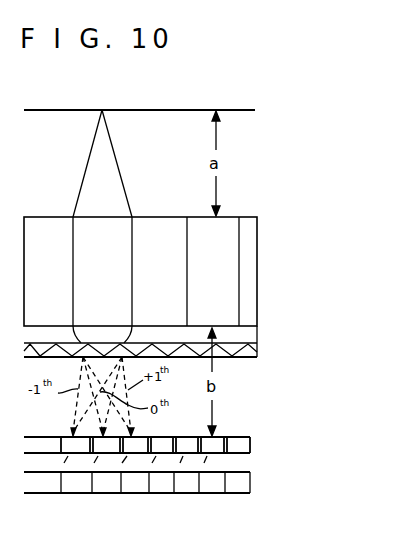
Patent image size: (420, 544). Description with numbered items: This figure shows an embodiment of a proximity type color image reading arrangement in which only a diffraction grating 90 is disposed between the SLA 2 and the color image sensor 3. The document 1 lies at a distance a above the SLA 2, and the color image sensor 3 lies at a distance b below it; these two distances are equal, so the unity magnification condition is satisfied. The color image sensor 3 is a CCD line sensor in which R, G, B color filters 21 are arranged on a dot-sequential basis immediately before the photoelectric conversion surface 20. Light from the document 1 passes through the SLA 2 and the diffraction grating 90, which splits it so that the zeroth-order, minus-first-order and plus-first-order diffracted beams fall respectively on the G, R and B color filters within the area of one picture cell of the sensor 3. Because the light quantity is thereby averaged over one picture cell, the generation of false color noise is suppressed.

The document 1 is at (255, 110).
The SLA 2 is at (249, 250).
The diffraction grating 90 is at (258, 349).
The R, G, B color filters 21 is at (246, 445).
The photoelectric conversion surface 20 is at (248, 482).
The color image sensor 3 is at (180, 464).